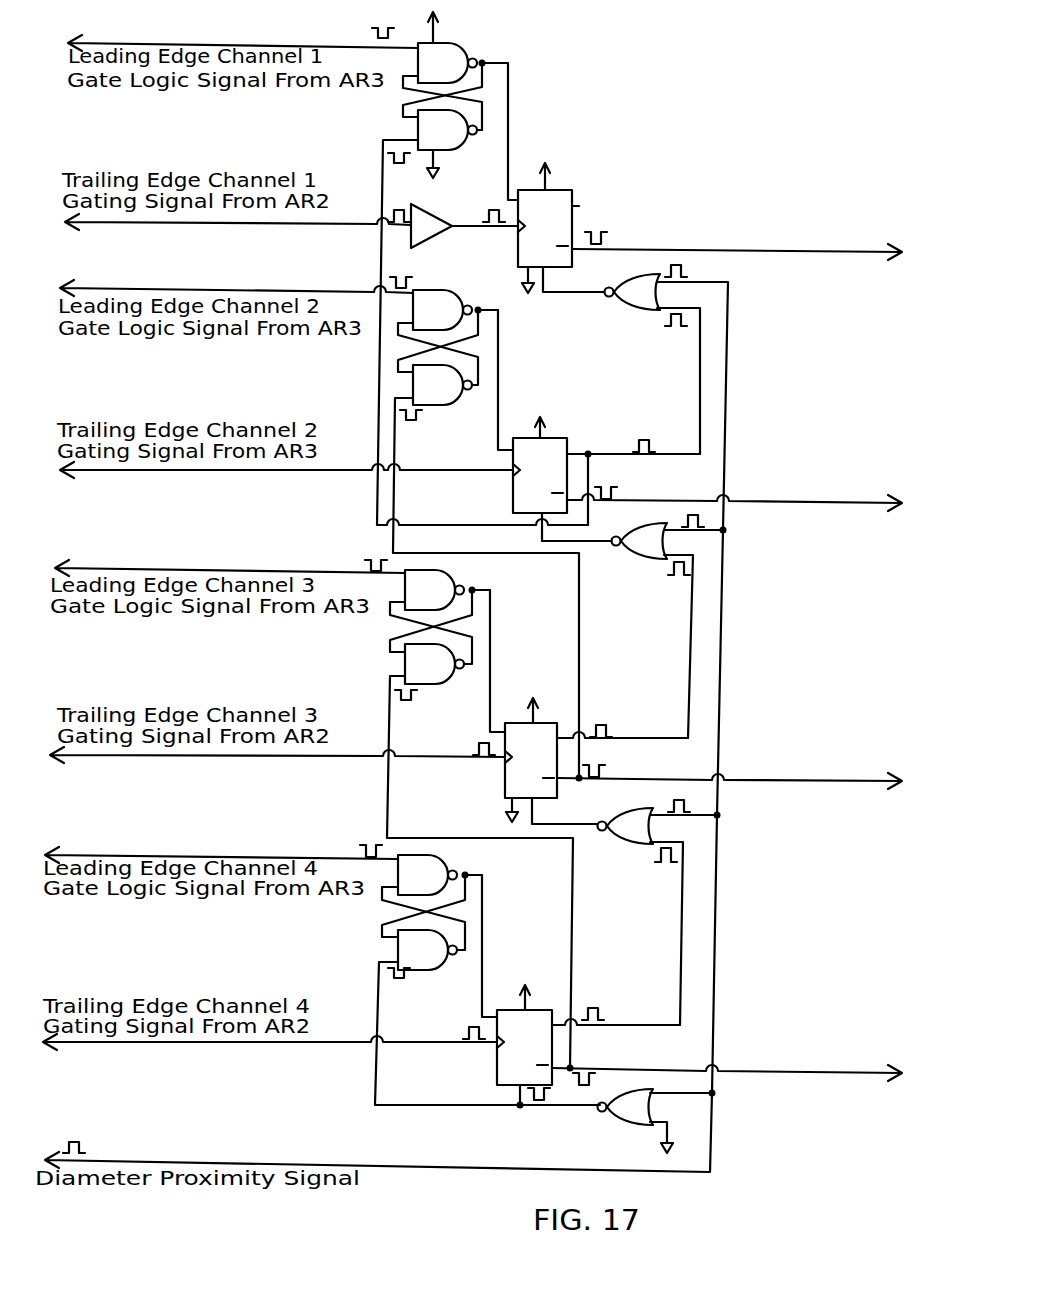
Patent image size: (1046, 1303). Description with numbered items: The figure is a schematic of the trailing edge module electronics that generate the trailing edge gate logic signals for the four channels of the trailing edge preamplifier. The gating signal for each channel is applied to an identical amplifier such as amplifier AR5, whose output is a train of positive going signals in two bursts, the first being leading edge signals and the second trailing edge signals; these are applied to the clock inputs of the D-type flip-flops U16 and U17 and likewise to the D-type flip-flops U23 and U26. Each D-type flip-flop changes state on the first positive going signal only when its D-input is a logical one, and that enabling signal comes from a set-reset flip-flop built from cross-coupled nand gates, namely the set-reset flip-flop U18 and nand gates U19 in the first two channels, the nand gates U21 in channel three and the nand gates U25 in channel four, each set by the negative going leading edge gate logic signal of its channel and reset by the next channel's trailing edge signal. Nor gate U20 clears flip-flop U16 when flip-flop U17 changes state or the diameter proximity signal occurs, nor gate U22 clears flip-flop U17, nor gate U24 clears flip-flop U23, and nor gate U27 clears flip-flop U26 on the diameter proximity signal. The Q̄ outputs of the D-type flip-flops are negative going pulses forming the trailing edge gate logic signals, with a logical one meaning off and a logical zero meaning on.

The set-reset flip-flop U18 is at (437, 110).
The amplifier AR5 is at (433, 214).
The D-type flip-flop U16 is at (572, 194).
The nor gate U20 is at (637, 302).
The cross-coupled nand gates U19 is at (432, 368).
The D-type flip-flop U17 is at (567, 445).
The nor gate U22 is at (639, 549).
The nand gates U21 is at (440, 648).
The D-type flip-flop U23 is at (549, 723).
The nor gate U24 is at (624, 838).
The nand gates U25 is at (432, 935).
The D-type flip-flop U26 is at (534, 1010).
The nor gate U27 is at (621, 1120).